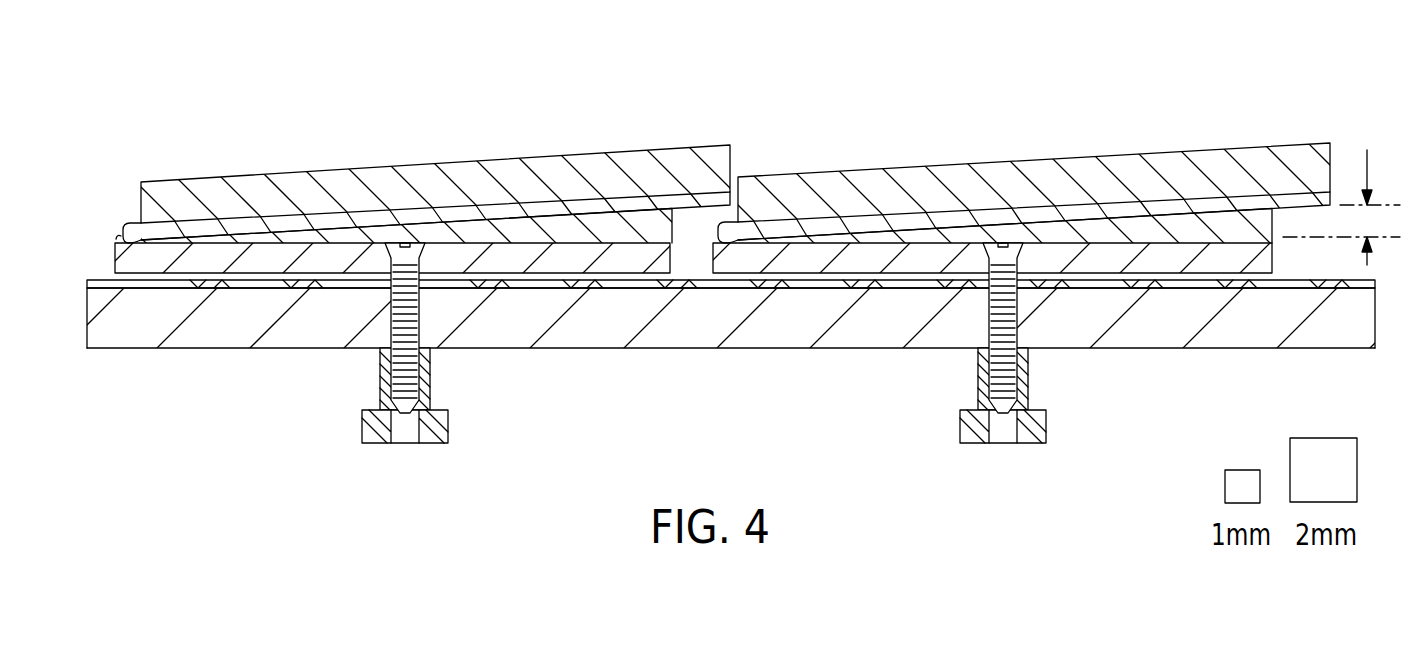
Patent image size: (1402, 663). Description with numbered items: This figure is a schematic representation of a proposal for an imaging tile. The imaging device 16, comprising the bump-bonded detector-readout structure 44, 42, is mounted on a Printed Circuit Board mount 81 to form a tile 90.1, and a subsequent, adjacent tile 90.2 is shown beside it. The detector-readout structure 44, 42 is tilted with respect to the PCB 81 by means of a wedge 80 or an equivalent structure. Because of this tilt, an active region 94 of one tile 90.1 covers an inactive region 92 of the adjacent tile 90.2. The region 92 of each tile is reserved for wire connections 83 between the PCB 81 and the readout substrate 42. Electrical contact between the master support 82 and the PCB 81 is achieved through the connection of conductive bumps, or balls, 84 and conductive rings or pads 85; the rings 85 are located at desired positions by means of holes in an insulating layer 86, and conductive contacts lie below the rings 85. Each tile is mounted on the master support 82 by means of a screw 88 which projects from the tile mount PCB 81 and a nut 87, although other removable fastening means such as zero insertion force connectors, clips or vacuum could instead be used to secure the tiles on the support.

The imaging device 16 is at (441, 143).
The readout substrate 42 is at (207, 230).
The detector 44 is at (161, 188).
The wedge 80 is at (412, 242).
The Printed Circuit Board mount 81 is at (247, 265).
The master support 82 is at (143, 349).
The wire connections 83 is at (120, 233).
The conductive bumps 84 is at (313, 242).
The conductive rings 85 is at (297, 288).
The insulating layer 86 is at (558, 292).
The nut 87 is at (448, 433).
The screw 88 is at (420, 367).
The tile 90.1 is at (441, 141).
The adjacent tile 90.2 is at (1060, 148).
The inactive region 92 is at (137, 200).
The active region 94 is at (730, 130).